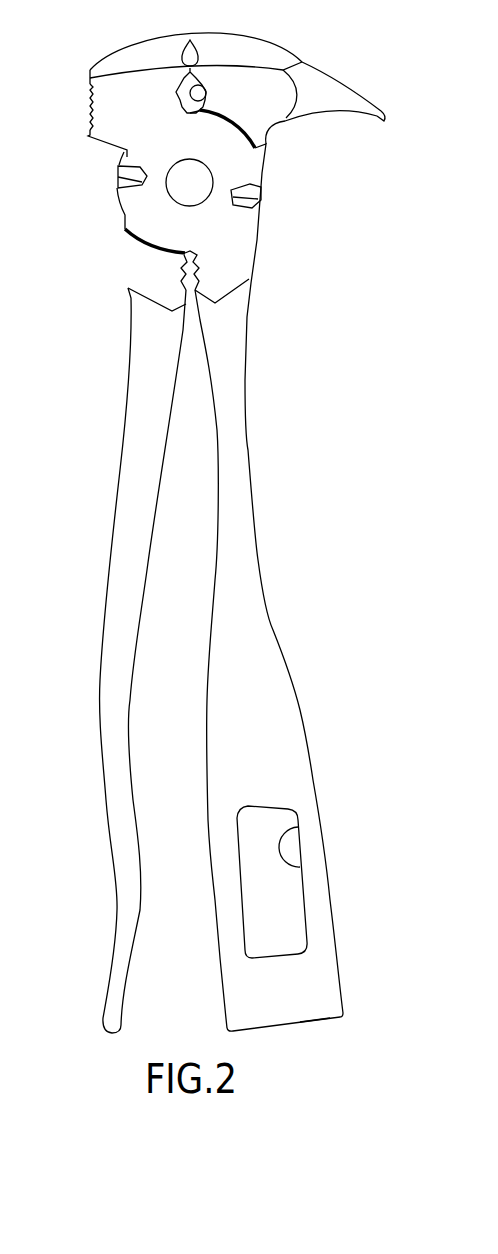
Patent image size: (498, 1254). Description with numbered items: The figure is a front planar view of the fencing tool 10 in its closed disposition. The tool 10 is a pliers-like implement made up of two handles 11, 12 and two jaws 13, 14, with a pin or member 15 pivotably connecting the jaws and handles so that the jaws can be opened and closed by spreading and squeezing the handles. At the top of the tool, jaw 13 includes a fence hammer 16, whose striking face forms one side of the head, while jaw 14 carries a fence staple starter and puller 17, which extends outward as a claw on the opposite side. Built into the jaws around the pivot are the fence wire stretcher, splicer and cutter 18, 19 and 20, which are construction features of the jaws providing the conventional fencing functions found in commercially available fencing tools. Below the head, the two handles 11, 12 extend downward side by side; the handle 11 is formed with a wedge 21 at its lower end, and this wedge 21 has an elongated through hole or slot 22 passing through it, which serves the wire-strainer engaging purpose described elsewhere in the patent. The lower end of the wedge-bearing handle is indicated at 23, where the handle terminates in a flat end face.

The fencing tool 10 is at (327, 370).
The handle 11 is at (273, 630).
The handle 12 is at (100, 713).
The jaw 13 is at (88, 128).
The jaw 14 is at (328, 90).
The pin or member 15 is at (185, 187).
The fence hammer 16 is at (88, 95).
The fence staple starter and puller 17 is at (386, 120).
The fence wire stretcher 18 is at (188, 62).
The fence wire splicer 19 is at (204, 87).
The fence wire cutter 20 is at (118, 177).
The wedge 21 is at (333, 900).
The elongated through hole or slot 22 is at (298, 823).
The handle end 23 is at (320, 1024).